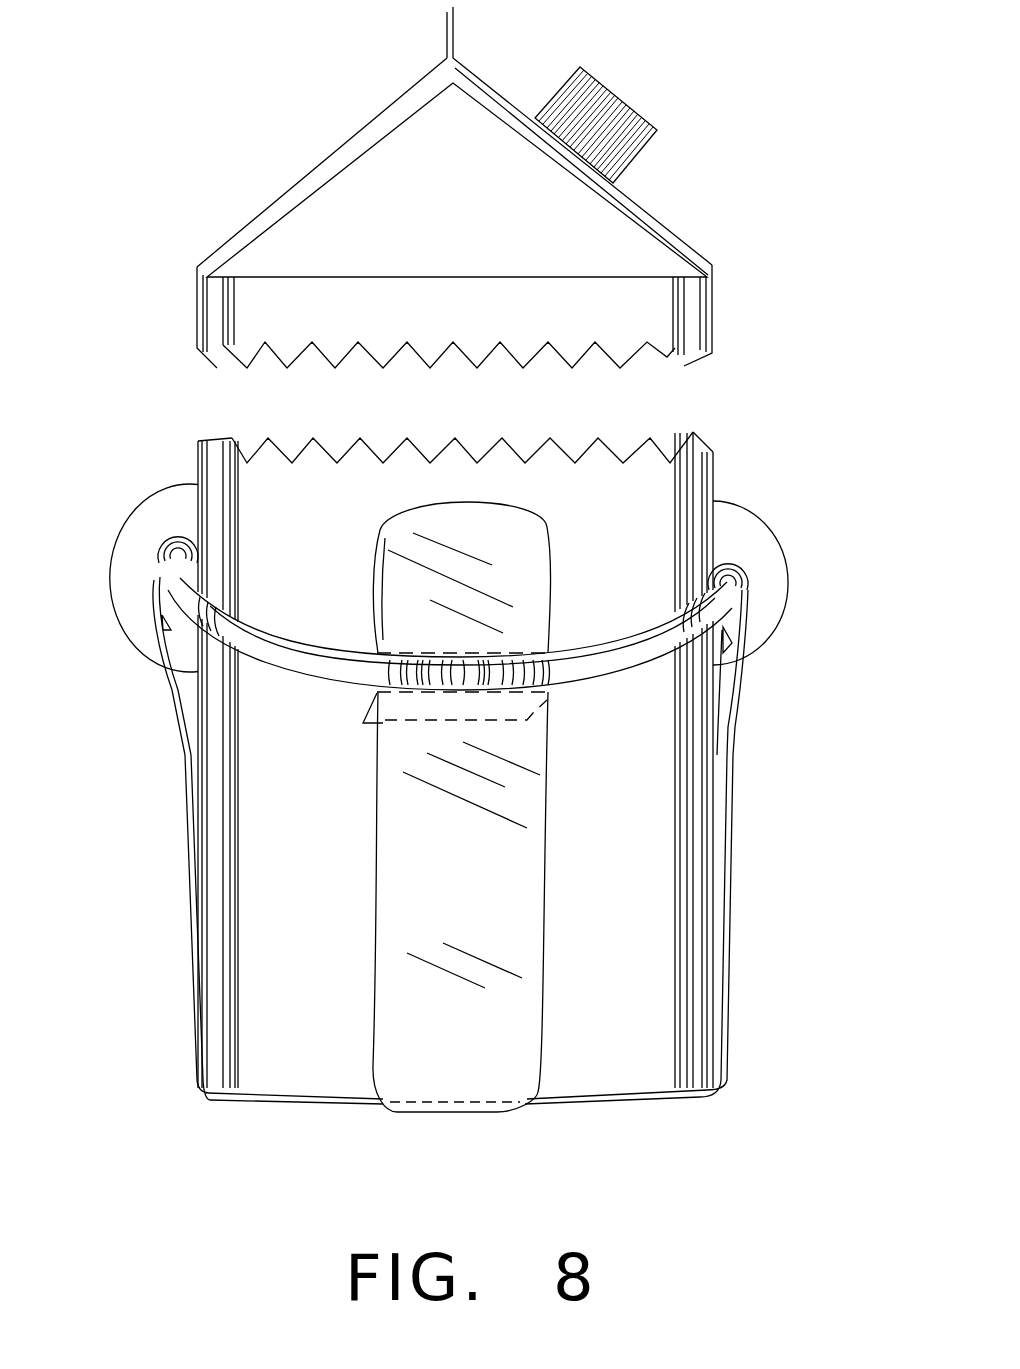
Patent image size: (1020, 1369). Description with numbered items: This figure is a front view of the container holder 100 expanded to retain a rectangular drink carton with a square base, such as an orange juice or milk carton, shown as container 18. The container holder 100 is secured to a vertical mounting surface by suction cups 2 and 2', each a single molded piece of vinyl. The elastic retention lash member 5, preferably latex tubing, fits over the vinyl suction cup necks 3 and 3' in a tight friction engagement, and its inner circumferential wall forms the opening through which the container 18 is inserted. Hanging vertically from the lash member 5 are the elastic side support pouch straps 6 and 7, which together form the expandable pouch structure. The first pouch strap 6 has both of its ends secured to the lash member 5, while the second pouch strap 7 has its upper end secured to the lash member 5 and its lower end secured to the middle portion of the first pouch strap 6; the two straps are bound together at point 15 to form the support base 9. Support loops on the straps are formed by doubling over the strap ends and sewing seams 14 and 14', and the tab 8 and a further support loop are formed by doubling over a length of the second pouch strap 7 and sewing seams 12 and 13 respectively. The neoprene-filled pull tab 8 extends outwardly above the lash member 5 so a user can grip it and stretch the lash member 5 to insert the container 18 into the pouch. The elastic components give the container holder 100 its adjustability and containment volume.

The container holder 100 is at (806, 117).
The container 18 is at (440, 115).
The suction cup 2 is at (131, 541).
The suction cup 2' is at (773, 533).
The suction cup neck 3 is at (110, 559).
The suction cup neck 3' is at (801, 578).
The elastic retention lash member 5 is at (338, 667).
The seam 12 is at (497, 653).
The seam 13 is at (468, 693).
The seam 14 is at (113, 666).
The seam 14' is at (802, 672).
The first pouch strap 6 is at (183, 753).
The support base 9 is at (335, 1105).
The tab 8 is at (473, 528).
The second pouch strap 7 is at (497, 888).
The binding point 15 is at (502, 1113).